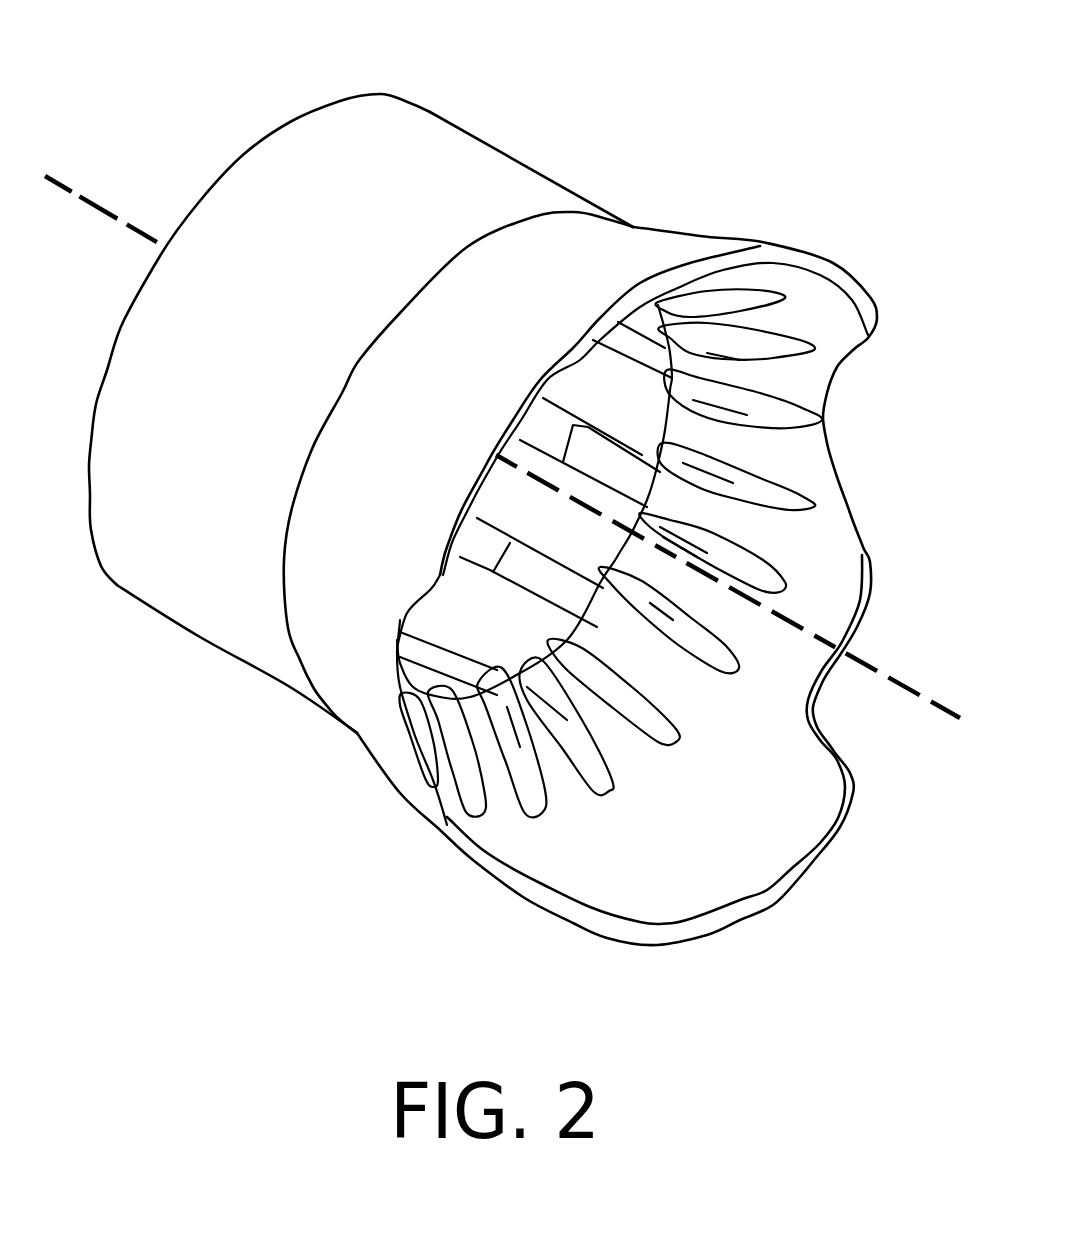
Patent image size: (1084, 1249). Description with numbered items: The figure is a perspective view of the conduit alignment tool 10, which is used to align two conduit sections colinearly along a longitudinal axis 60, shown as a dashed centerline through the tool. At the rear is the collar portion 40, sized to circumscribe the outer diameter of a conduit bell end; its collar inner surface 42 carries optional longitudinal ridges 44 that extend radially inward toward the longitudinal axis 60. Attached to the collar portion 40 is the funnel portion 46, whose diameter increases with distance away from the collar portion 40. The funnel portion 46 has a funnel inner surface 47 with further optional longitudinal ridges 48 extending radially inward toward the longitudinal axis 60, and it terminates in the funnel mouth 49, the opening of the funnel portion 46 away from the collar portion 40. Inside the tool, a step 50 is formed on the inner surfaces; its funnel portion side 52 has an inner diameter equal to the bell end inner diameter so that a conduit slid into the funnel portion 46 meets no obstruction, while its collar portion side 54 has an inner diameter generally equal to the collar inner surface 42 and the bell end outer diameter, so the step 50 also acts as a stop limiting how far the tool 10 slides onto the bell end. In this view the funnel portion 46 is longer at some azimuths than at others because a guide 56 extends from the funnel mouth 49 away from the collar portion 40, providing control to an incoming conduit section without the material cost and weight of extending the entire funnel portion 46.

The conduit alignment tool 10 is at (640, 127).
The collar portion 40 is at (447, 117).
The collar inner surface 42 is at (580, 390).
The longitudinal ridges 44 is at (632, 477).
The funnel portion 46 is at (353, 733).
The funnel inner surface 47 is at (810, 451).
The longitudinal ridges 48 is at (805, 501).
The funnel mouth 49 is at (513, 917).
The step 50 is at (650, 488).
The funnel portion side 52 is at (523, 648).
The collar portion side 54 is at (640, 565).
The guide 56 is at (757, 907).
The longitudinal axis 60 is at (62, 177).